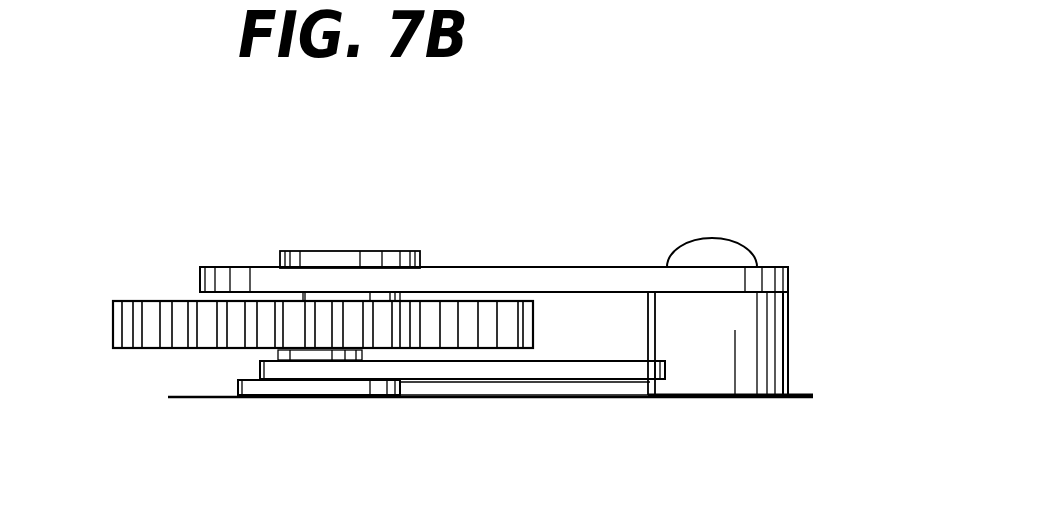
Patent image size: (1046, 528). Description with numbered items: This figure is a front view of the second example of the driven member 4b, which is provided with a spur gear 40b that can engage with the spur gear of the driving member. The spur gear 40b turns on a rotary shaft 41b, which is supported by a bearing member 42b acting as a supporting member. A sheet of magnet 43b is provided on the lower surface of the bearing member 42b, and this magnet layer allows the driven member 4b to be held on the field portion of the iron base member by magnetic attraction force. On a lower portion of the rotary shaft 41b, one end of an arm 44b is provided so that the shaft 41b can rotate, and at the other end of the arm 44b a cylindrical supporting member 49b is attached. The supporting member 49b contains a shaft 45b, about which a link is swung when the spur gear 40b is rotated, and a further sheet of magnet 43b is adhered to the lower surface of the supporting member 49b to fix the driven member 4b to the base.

The driven member 4b is at (623, 172).
The spur gear 40b is at (467, 310).
The rotary shaft 41b is at (290, 355).
The bearing member 42b is at (403, 388).
The sheet of magnet 43b is at (320, 397).
The arm 44b is at (595, 370).
The shaft 45b is at (727, 237).
The cylindrical supporting member 49b is at (748, 342).